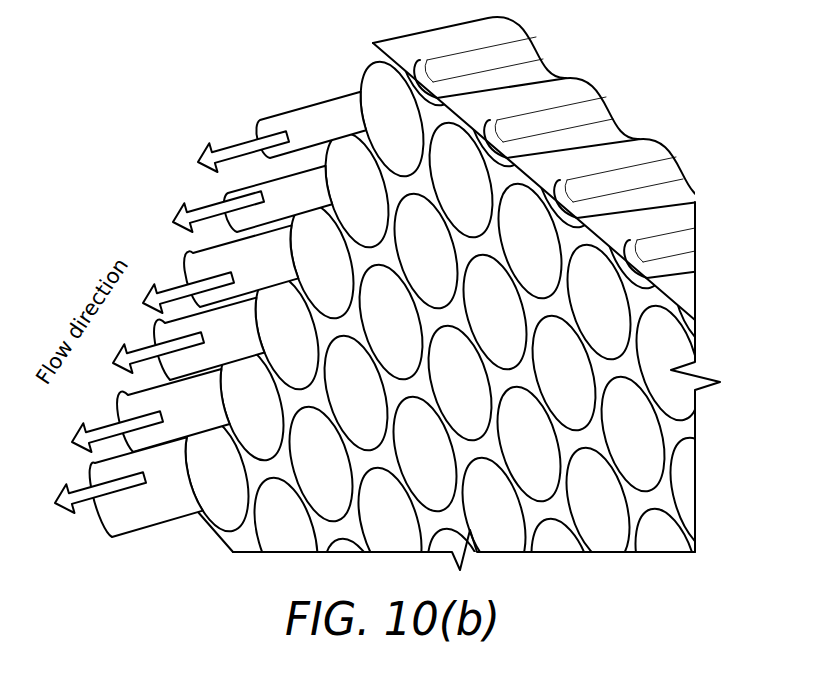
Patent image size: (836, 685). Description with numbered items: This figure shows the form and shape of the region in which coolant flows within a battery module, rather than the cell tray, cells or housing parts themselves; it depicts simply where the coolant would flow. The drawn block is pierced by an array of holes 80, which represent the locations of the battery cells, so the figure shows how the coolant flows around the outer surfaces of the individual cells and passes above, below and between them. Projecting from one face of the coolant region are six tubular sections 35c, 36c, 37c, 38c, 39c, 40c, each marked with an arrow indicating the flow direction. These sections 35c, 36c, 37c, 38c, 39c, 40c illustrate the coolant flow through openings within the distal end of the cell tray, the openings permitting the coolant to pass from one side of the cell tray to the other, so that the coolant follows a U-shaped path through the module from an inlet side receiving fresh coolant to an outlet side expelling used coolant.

The holes 80 is at (607, 292).
The section 35c is at (307, 117).
The section 36c is at (270, 190).
The section 37c is at (217, 263).
The section 38c is at (233, 347).
The section 39c is at (200, 418).
The section 40c is at (157, 513).